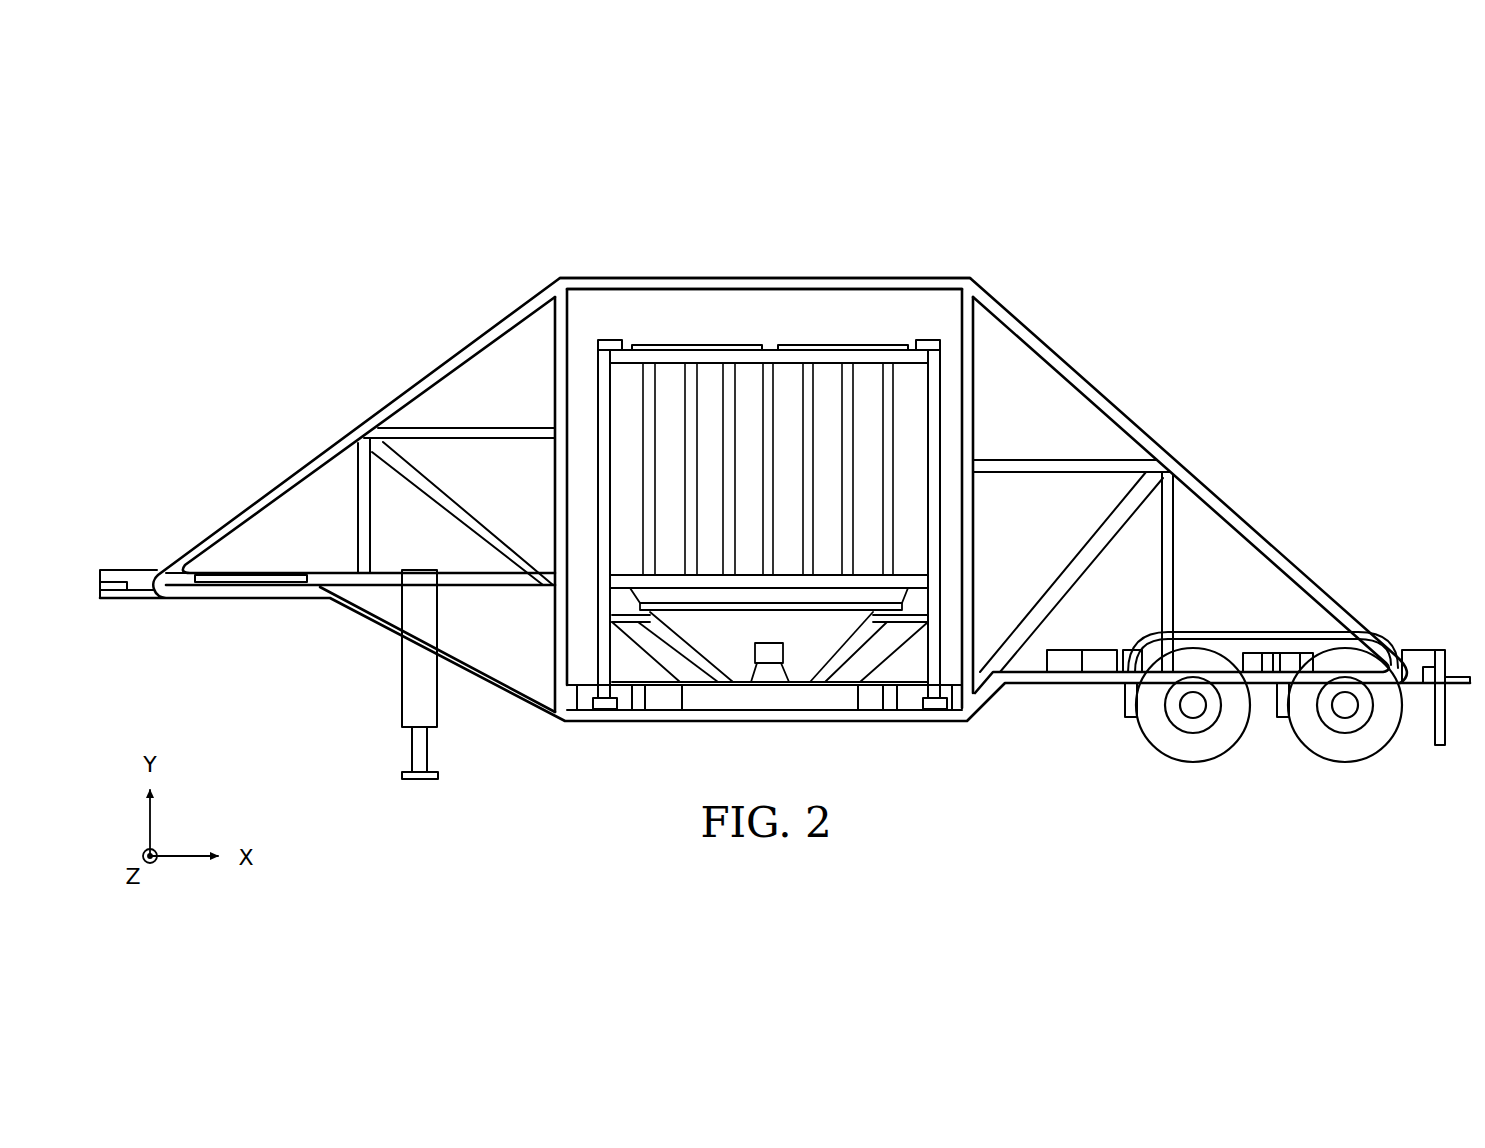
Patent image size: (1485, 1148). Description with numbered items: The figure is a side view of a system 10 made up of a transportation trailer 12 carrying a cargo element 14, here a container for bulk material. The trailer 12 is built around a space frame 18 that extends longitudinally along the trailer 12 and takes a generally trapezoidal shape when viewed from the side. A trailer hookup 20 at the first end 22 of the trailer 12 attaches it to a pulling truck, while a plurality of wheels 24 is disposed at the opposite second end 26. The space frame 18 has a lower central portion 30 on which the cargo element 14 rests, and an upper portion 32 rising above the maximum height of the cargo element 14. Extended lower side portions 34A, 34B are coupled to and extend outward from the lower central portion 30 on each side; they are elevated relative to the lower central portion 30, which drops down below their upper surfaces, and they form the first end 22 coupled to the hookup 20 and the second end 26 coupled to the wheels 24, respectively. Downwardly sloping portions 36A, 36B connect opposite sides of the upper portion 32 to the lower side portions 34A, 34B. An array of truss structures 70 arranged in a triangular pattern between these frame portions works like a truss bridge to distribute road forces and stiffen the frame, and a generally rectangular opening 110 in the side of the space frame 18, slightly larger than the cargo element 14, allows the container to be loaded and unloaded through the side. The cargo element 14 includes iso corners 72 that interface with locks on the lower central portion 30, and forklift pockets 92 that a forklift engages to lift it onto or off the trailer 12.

The system 10 is at (416, 181).
The transportation trailer 12 is at (1155, 276).
The cargo element 14 is at (590, 518).
The space frame 18 is at (890, 274).
The trailer hookup 20 is at (133, 600).
The first end 22 is at (127, 552).
The wheels 24 is at (1195, 752).
The second end 26 is at (1423, 636).
The lower central portion 30 is at (765, 723).
The upper portion 32 is at (763, 277).
The extended lower side portion 34A is at (373, 628).
The extended lower side portion 34B is at (1070, 685).
The downwardly sloping portion 36A is at (357, 433).
The downwardly sloping portion 36B is at (1182, 462).
The truss structures 70 is at (356, 512).
The iso corners 72 is at (605, 707).
The forklift pockets 92 is at (665, 703).
The opening 110 is at (618, 303).